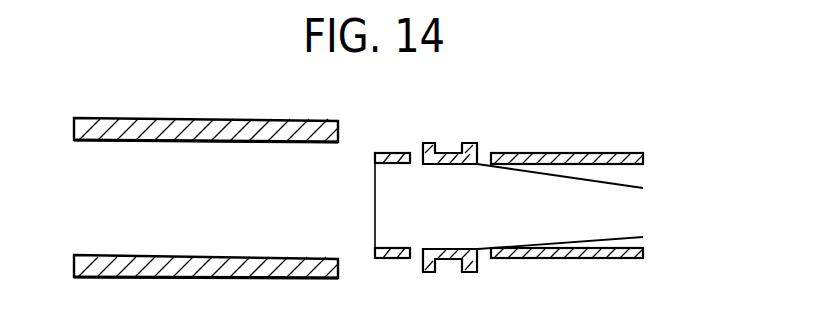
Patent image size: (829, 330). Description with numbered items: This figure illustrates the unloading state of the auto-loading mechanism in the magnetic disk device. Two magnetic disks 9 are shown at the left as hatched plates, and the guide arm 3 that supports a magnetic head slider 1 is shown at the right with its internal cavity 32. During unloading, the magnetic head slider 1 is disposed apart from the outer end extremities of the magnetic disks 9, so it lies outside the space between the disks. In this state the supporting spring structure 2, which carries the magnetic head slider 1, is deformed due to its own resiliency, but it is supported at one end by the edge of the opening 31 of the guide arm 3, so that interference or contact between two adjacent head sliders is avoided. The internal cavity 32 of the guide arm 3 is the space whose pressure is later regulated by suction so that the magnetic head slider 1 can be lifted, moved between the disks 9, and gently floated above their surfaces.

The magnetic head slider 1 is at (445, 163).
The supporting spring structure 2 is at (602, 185).
The guide arm 3 is at (617, 153).
The magnetic disk 9 is at (195, 118).
The opening 31 is at (413, 150).
The internal cavity 32 is at (389, 225).